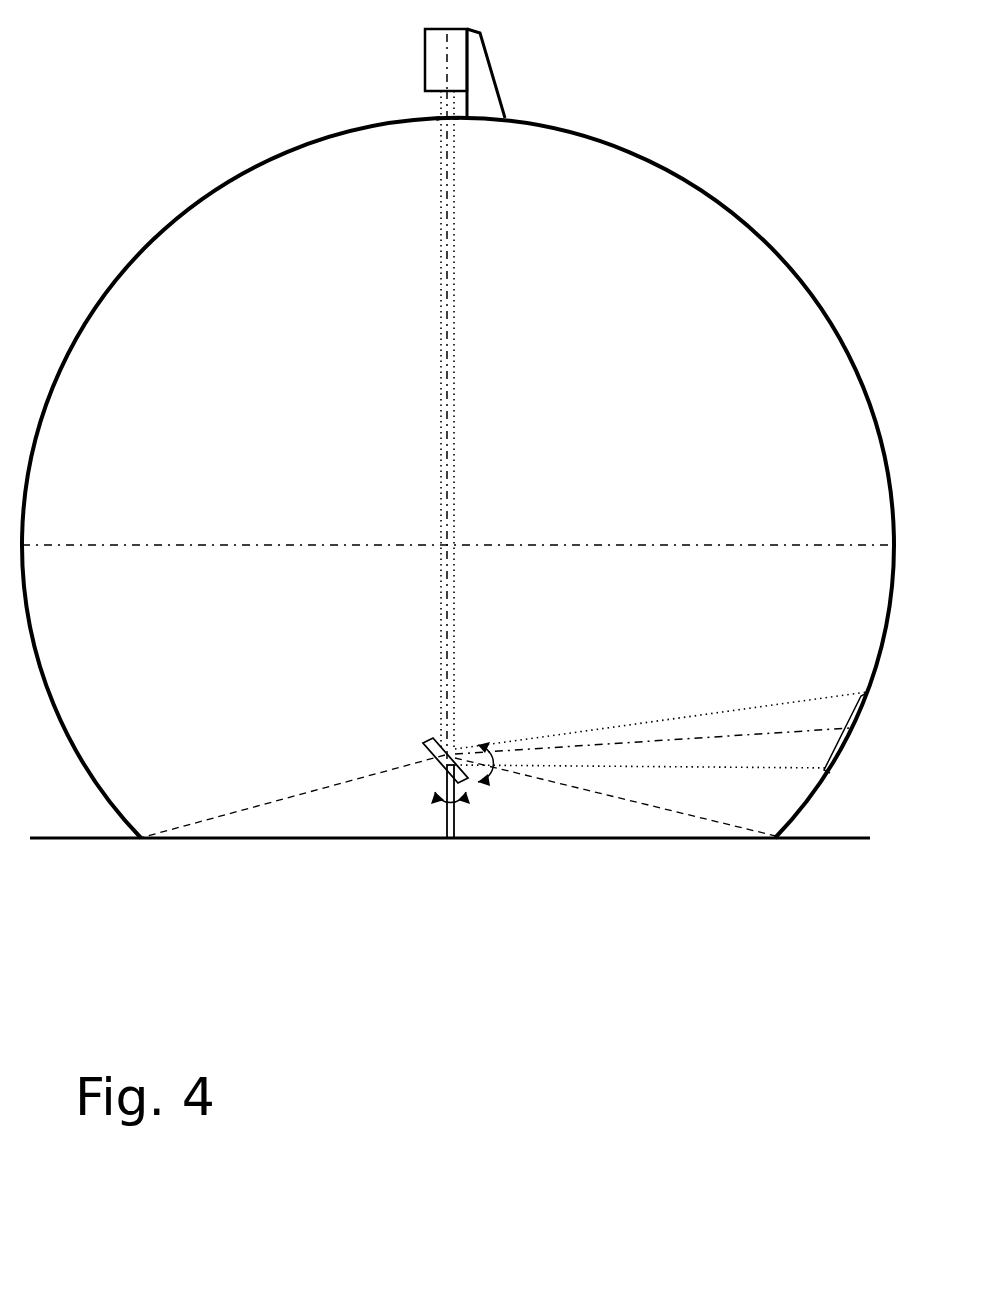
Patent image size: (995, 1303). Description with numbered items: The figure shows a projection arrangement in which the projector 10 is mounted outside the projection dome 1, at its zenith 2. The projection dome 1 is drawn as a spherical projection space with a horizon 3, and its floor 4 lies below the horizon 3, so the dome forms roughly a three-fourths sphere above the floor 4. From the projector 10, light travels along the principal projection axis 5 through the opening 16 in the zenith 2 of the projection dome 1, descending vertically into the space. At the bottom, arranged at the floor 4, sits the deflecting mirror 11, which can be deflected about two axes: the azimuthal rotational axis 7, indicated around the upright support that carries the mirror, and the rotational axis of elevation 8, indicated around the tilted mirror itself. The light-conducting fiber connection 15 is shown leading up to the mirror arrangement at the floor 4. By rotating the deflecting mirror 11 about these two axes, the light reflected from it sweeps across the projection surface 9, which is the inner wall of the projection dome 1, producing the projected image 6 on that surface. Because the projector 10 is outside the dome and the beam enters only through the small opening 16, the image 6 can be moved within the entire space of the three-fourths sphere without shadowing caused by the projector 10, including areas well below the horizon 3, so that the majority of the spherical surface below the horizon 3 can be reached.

The projection dome 1 is at (573, 133).
The zenith 2 is at (445, 121).
The horizon 3 is at (713, 545).
The floor 4 is at (652, 838).
The principal projection axis 5 is at (446, 375).
The projected image 6 is at (855, 715).
The azimuthal rotational axis 7 is at (433, 797).
The rotational axis of elevation 8 is at (457, 766).
The projection surface 9 is at (780, 285).
The projector 10 is at (455, 82).
The deflecting mirror 11 is at (465, 775).
The light-conducting fiber connection 15 is at (447, 823).
The opening 16 is at (440, 119).